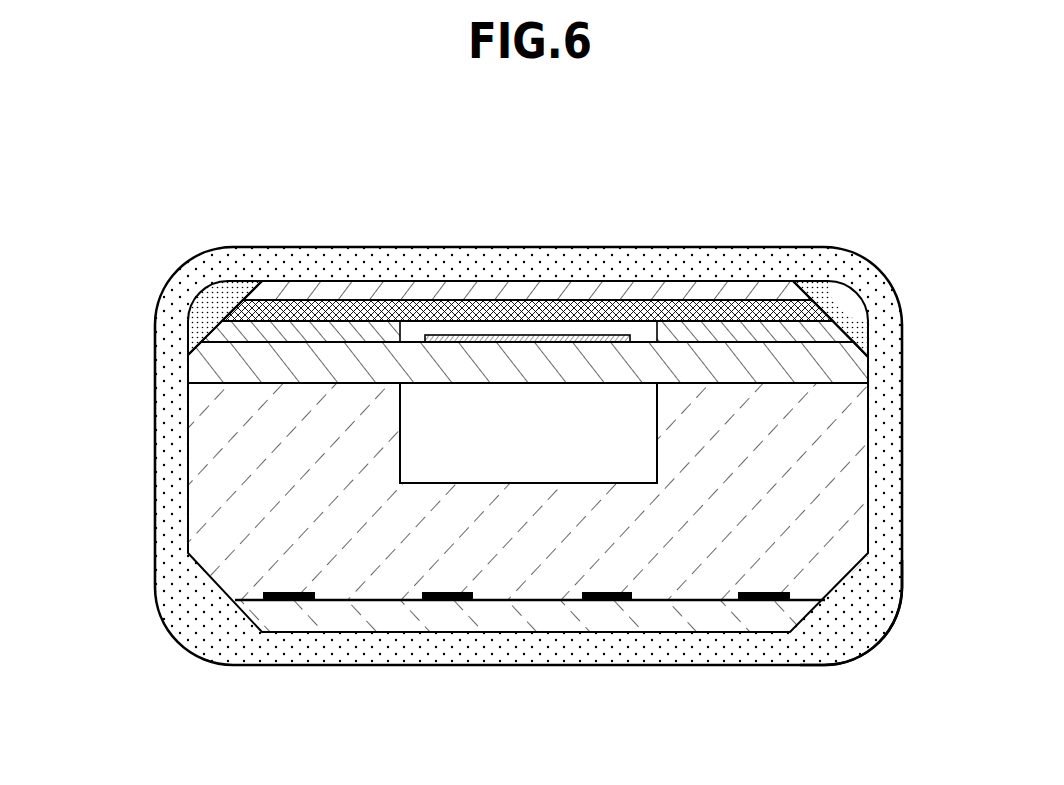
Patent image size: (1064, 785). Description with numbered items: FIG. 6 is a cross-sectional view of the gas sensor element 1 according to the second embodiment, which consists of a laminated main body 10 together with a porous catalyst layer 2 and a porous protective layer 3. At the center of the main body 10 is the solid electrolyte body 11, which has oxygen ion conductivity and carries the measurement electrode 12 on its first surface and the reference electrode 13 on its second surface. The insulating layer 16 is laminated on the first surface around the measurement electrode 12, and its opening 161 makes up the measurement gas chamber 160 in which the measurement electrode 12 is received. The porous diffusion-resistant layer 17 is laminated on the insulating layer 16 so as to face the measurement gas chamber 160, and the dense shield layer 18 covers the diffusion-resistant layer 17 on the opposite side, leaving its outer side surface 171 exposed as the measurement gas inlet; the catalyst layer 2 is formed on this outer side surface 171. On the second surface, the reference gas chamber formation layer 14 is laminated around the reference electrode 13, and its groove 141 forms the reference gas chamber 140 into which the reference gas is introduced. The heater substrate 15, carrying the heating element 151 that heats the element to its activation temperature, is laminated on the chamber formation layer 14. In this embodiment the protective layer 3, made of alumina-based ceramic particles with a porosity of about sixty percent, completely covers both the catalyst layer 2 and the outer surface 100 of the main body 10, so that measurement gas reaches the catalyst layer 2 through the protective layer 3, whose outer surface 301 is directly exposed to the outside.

The gas sensor element 1 is at (536, 439).
The catalyst layer 2 is at (200, 300).
The protective layer 3 is at (890, 320).
The main body 10 is at (530, 581).
The solid electrolyte body 11 is at (820, 370).
The measurement electrode 12 is at (587, 447).
The reference electrode 13 is at (528, 393).
The reference gas chamber formation layer 14 is at (790, 488).
The heater substrate 15 is at (430, 622).
The insulating layer 16 is at (330, 332).
The diffusion-resistant layer 17 is at (647, 313).
The shield layer 18 is at (572, 294).
The outer surface of the main body 100 is at (868, 525).
The reference gas chamber 140 is at (615, 434).
The groove 141 is at (435, 432).
The heating element 151 is at (307, 603).
The measurement gas chamber 160 is at (452, 331).
The opening 161 is at (402, 331).
The outer side surface 171 is at (220, 300).
The outer surface of the protective layer 301 is at (877, 643).